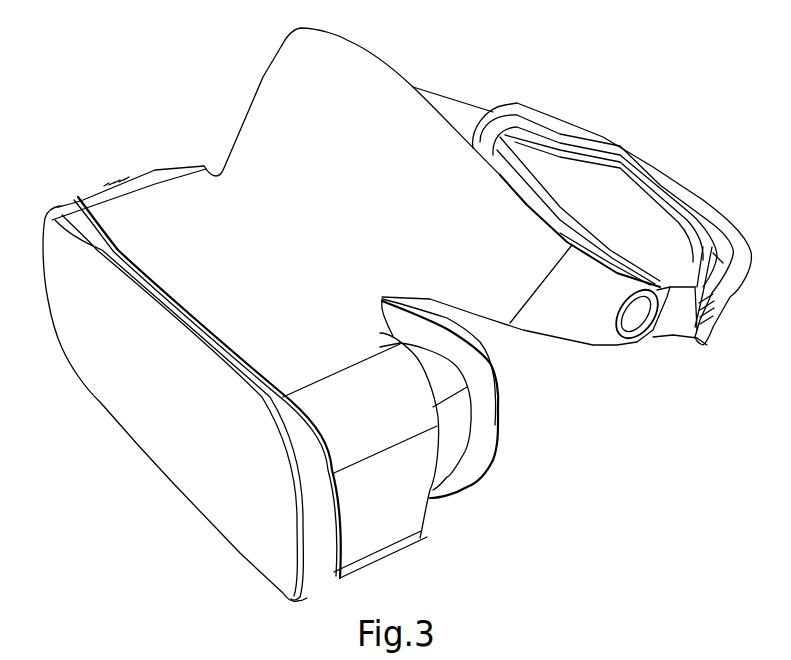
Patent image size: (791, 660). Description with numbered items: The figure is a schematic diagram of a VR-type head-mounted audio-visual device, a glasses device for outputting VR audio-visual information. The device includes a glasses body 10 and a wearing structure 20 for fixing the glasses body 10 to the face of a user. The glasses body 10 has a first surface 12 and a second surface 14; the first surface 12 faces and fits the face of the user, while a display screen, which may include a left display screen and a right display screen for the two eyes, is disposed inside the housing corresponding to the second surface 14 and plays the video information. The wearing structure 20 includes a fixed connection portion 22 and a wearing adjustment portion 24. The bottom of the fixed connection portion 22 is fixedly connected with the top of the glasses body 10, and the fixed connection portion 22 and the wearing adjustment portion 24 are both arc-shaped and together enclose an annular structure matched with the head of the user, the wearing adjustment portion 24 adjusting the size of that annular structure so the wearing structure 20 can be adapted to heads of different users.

The glasses body 10 is at (232, 318).
The first surface 12 is at (488, 430).
The second surface 14 is at (185, 408).
The wearing structure 20 is at (327, 153).
The fixed connection portion 22 is at (343, 68).
The wearing adjustment portion 24 is at (597, 157).